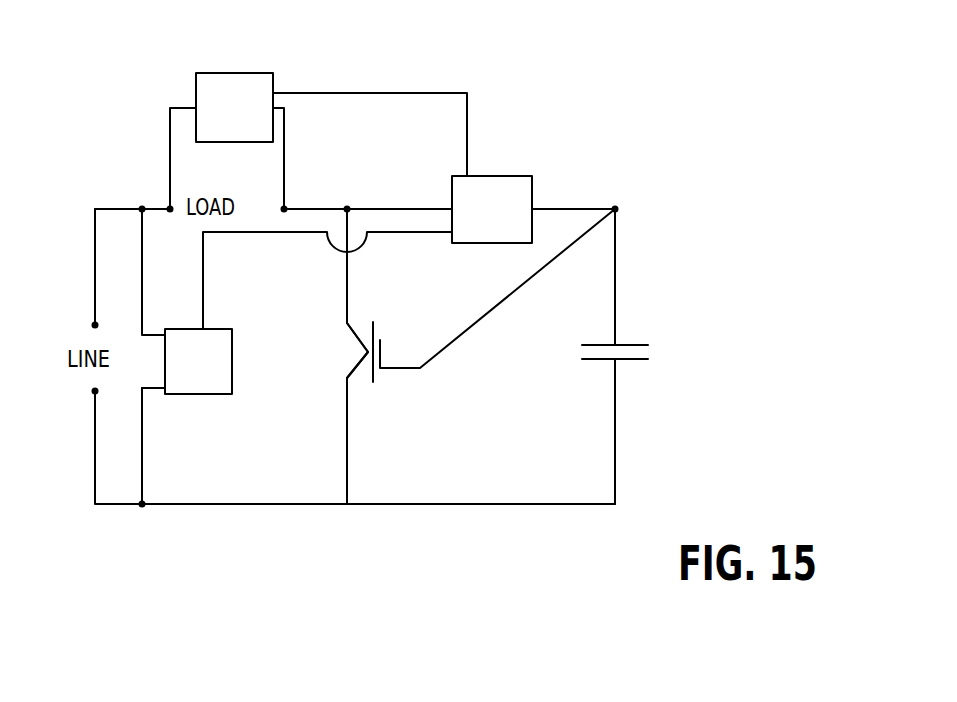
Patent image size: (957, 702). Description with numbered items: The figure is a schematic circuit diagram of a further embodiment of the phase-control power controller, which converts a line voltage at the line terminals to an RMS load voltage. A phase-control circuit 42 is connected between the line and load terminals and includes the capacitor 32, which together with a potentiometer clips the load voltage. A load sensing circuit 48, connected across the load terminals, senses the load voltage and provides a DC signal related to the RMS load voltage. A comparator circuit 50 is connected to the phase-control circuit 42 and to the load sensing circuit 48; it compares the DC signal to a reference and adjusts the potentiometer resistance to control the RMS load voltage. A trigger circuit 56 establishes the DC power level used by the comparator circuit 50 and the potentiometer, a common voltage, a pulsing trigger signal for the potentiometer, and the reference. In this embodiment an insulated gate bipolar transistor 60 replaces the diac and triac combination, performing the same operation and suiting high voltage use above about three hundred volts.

The load sensing circuit 48 is at (243, 73).
The comparator circuit 50 is at (497, 176).
The trigger circuit 56 is at (202, 394).
The insulated gate bipolar transistor 60 is at (357, 370).
The capacitor 32 is at (630, 359).
The phase-control circuit 42 is at (615, 456).